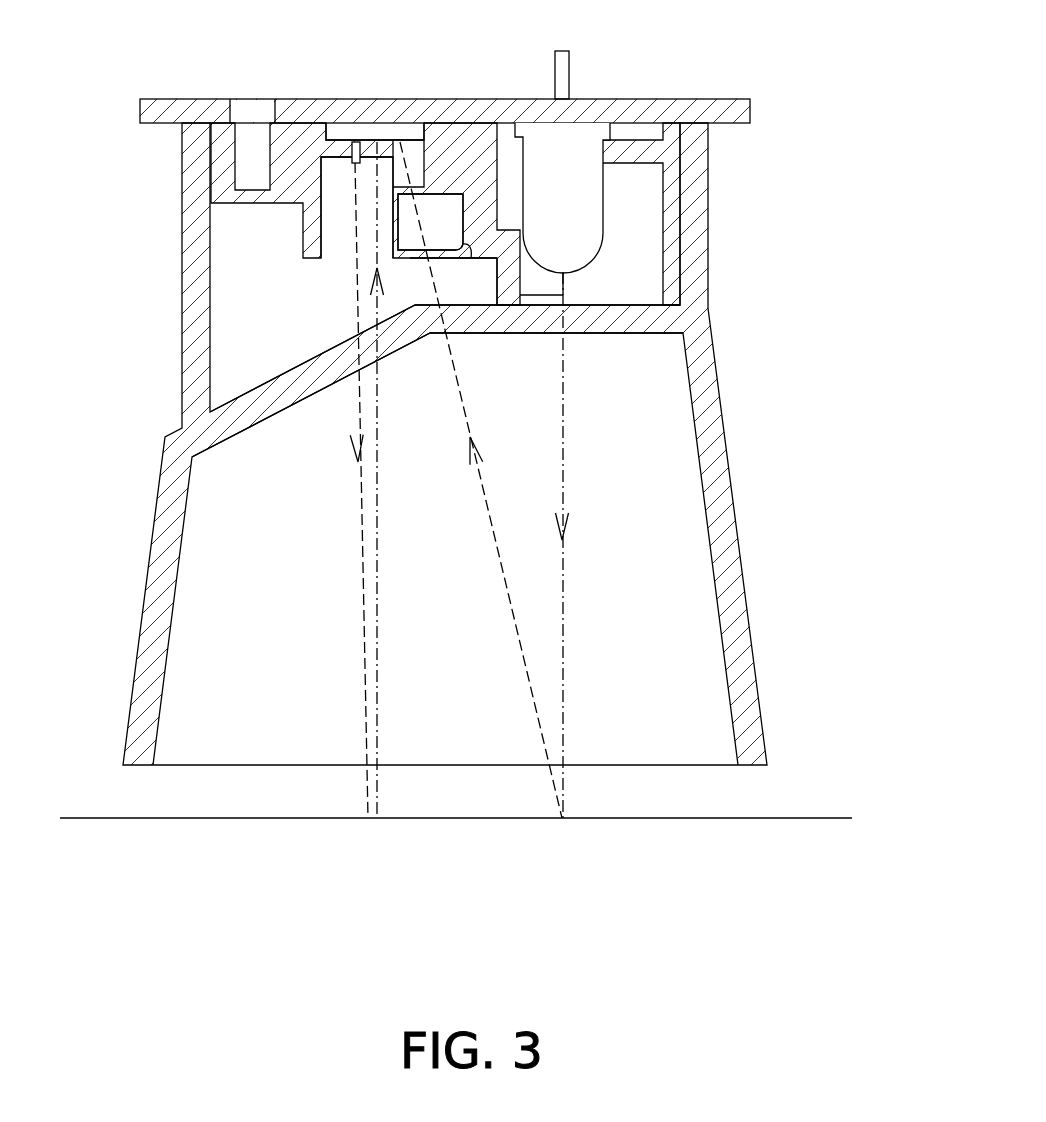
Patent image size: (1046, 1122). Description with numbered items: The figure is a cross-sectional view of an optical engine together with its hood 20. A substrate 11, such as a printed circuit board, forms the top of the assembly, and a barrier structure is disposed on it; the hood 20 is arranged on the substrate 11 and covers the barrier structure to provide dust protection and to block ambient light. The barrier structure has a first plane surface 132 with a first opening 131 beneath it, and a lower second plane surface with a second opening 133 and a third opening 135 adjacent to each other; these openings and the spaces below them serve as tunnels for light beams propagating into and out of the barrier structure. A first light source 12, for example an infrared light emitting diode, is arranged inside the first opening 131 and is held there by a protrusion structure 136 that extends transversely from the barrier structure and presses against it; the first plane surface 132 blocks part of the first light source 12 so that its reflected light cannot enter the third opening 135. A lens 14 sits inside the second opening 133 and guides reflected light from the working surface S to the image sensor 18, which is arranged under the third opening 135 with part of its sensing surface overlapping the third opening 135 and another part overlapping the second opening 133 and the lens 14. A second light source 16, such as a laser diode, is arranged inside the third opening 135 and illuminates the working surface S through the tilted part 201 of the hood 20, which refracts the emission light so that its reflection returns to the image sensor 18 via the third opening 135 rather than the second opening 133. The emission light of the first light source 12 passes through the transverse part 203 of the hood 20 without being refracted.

The substrate 11 is at (732, 99).
The first light source 12 is at (582, 228).
The lens 14 is at (410, 258).
The second light source 16 is at (353, 148).
The image sensor 18 is at (367, 130).
The hood 20 is at (736, 567).
The first opening 131 is at (598, 267).
The first plane surface 132 is at (539, 300).
The second opening 133 is at (447, 253).
The third opening 135 is at (340, 245).
The protrusion structure 136 is at (638, 152).
The tilted part 201 is at (283, 393).
The transverse part 203 is at (632, 327).
The working surface S is at (786, 818).